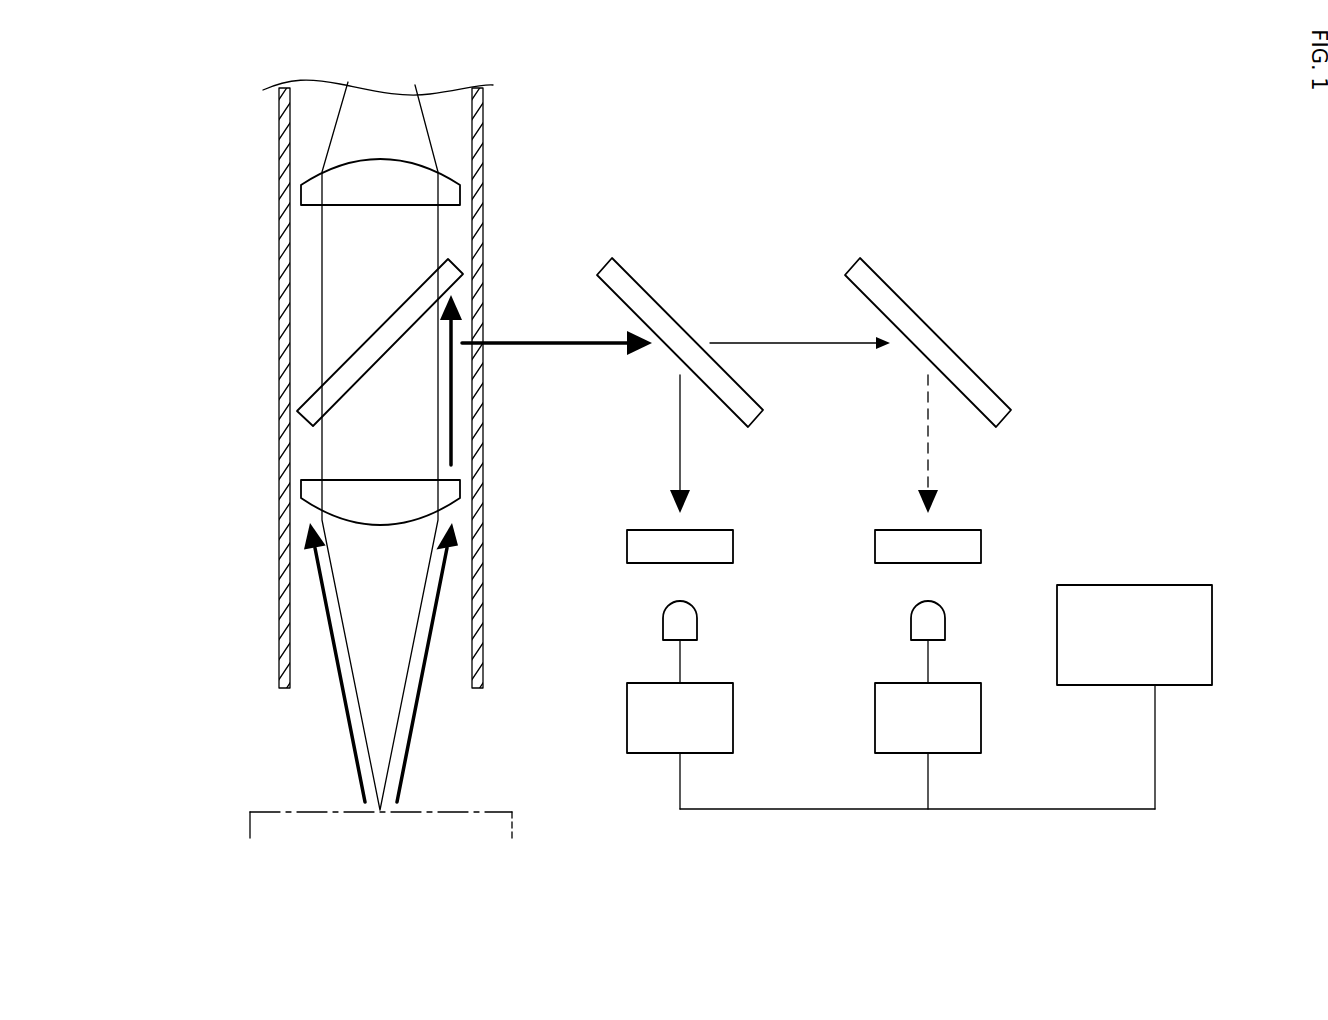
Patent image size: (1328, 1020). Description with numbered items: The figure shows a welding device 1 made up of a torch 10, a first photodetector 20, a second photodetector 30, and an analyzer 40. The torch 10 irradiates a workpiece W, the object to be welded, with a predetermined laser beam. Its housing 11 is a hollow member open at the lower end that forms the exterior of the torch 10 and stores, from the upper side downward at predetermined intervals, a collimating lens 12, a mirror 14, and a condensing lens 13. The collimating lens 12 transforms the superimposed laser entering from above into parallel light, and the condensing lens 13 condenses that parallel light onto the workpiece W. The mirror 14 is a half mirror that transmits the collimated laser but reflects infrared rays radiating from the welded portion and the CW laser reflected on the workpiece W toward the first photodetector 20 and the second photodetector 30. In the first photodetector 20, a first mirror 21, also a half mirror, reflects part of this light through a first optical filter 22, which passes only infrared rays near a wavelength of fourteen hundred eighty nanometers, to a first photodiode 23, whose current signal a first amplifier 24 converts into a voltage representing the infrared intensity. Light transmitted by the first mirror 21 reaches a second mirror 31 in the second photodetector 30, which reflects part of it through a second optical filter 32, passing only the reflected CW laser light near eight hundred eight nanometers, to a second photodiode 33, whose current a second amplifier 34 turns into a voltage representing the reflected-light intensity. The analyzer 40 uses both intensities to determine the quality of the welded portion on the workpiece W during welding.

The welding device 1 is at (660, 459).
The torch 10 is at (193, 248).
The housing 11 is at (284, 305).
The collimating lens 12 is at (301, 197).
The condensing lens 13 is at (301, 490).
The mirror 14 is at (305, 406).
The first photodetector 20 is at (635, 190).
The first mirror 21 is at (627, 283).
The first optical filter 22 is at (632, 546).
The first photodiode 23 is at (668, 620).
The first amplifier 24 is at (632, 715).
The second photodetector 30 is at (883, 190).
The second mirror 31 is at (876, 283).
The second optical filter 32 is at (880, 546).
The second photodiode 33 is at (915, 620).
The second amplifier 34 is at (880, 715).
The analyzer 40 is at (1146, 648).
The workpiece W is at (270, 812).